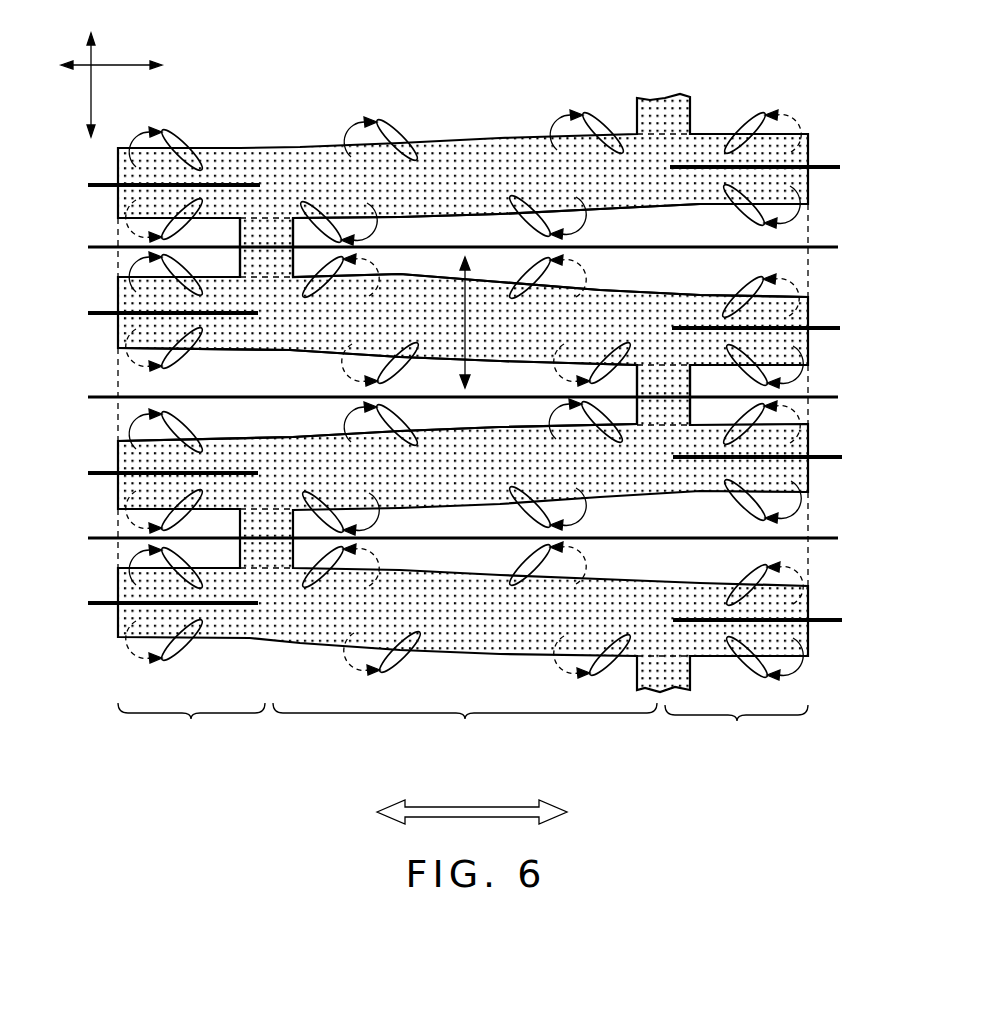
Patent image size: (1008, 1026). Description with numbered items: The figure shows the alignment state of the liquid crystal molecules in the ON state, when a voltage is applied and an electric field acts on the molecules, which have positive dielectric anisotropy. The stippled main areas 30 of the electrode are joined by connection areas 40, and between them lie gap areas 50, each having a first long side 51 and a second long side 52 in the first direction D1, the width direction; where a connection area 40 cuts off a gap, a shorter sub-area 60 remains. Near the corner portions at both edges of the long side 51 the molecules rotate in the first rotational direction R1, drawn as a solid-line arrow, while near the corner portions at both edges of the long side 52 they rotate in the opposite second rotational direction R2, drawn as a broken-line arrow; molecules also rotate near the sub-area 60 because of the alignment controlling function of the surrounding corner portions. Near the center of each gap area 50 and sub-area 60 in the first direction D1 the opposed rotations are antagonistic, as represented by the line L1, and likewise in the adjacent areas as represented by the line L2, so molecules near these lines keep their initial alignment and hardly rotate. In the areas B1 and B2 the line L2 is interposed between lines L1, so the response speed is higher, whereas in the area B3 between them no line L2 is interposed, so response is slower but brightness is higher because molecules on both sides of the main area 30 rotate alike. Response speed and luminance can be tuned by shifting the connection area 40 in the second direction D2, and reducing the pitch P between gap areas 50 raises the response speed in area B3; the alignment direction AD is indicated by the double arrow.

The main area 30 is at (802, 142).
The connection area 40 is at (268, 222).
The gap area 50 is at (130, 376).
The first long side 51 is at (292, 357).
The second long side 52 is at (292, 433).
The sub-area 60 is at (130, 236).
The line L1 is at (478, 393).
The line L2 is at (463, 394).
The first rotational direction R1 is at (372, 225).
The second rotational direction R2 is at (372, 270).
The pitch P is at (473, 322).
The first direction D1 is at (77, 85).
The second direction D2 is at (111, 54).
The area B1 is at (191, 724).
The area B2 is at (736, 726).
The area B3 is at (465, 724).
The alignment direction AD is at (472, 802).